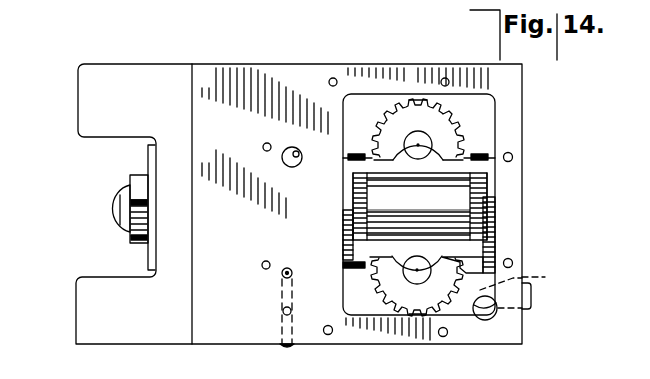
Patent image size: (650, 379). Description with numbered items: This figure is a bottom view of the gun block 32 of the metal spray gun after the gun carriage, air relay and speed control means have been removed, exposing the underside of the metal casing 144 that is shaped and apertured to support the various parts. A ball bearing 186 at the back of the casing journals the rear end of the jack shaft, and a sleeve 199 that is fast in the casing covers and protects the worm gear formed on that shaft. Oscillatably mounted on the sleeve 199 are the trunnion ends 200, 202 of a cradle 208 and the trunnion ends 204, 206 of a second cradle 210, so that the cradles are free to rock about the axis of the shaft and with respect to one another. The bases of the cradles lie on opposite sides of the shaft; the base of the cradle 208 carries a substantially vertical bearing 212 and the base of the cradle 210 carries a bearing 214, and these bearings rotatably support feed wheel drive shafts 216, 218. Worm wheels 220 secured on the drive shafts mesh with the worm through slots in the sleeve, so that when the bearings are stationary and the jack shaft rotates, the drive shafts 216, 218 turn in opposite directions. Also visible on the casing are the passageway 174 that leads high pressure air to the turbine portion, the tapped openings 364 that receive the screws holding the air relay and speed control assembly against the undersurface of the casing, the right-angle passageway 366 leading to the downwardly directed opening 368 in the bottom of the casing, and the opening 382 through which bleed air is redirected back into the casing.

The gun block 32 is at (68, 305).
The metal casing 144 is at (268, 40).
The passageway 174 is at (300, 167).
The ball bearing 186 is at (116, 212).
The sleeve 199 is at (472, 197).
The trunnion end 200 is at (364, 212).
The trunnion end 202 is at (462, 201).
The trunnion end 204 is at (348, 214).
The trunnion end 206 is at (485, 219).
The cradle 208 is at (497, 251).
The cradle 210 is at (495, 152).
The bearing 212 is at (398, 284).
The bearing 214 is at (452, 100).
The feed wheel drive shaft 216 is at (405, 268).
The feed wheel drive shaft 218 is at (409, 151).
The worm wheel 220 is at (413, 98).
The tapped opening 364 is at (334, 78).
The right-angle passageway 366 is at (550, 292).
The downwardly directed opening 368 is at (488, 320).
The opening 382 is at (312, 257).